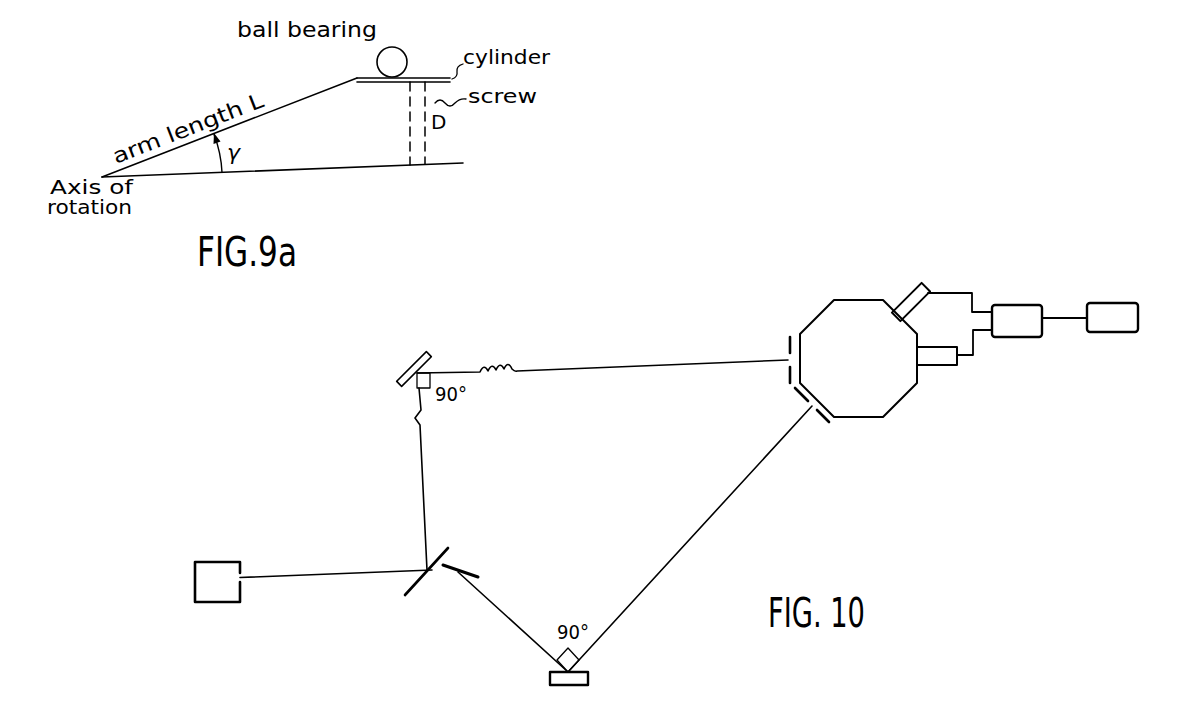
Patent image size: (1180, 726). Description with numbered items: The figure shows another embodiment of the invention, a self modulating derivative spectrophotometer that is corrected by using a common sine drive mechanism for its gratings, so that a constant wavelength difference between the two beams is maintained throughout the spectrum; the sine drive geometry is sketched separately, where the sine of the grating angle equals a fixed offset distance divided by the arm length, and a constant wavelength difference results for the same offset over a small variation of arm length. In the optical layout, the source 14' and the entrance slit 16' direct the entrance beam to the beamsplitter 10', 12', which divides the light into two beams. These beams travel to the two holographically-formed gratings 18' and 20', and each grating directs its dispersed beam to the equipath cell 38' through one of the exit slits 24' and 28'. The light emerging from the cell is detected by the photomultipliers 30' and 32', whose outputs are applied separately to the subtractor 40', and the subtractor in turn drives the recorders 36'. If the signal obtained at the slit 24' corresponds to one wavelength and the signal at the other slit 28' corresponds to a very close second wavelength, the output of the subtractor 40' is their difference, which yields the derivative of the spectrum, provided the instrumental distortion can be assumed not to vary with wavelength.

The beamsplitter 10' is at (443, 551).
The beamsplitter 12' is at (482, 558).
The source 14' is at (217, 582).
The entrance slit 16' is at (336, 554).
The holographically-formed grating 18' is at (435, 349).
The holographically-formed grating 20' is at (598, 676).
The exit slit 24' is at (763, 342).
The exit slit 28' is at (812, 429).
The photomultiplier 30' is at (908, 278).
The photomultiplier 32' is at (937, 378).
The recorder 36' is at (1112, 282).
The equipath cell 38' is at (858, 358).
The subtractor 40' is at (1017, 286).